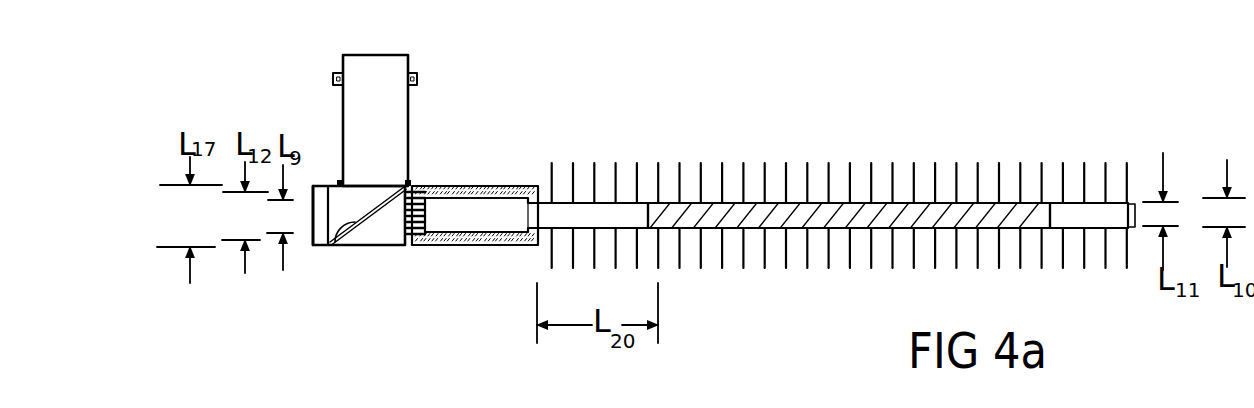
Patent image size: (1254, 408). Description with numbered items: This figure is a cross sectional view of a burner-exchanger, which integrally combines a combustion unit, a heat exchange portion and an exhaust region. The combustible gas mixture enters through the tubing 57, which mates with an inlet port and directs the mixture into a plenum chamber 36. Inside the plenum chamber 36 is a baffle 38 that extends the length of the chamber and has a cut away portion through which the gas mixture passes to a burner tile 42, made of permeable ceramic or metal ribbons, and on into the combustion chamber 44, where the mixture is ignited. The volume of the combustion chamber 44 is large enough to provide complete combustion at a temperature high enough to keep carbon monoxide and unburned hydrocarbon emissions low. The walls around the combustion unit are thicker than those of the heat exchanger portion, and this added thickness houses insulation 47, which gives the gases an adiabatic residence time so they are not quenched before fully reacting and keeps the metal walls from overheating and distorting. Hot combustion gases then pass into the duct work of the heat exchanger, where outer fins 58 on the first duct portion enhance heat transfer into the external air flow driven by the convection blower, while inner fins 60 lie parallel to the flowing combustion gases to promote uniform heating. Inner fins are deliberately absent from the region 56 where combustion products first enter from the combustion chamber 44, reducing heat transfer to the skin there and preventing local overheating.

The plenum chamber 36 is at (343, 204).
The baffle 38 is at (336, 247).
The burner tile 42 is at (365, 239).
The combustion chamber 44 is at (485, 222).
The insulation 47 is at (467, 186).
The region without inner fins 56 is at (627, 217).
The tubing 57 is at (401, 70).
The outer fins 58 is at (807, 170).
The inner fins 60 is at (685, 217).